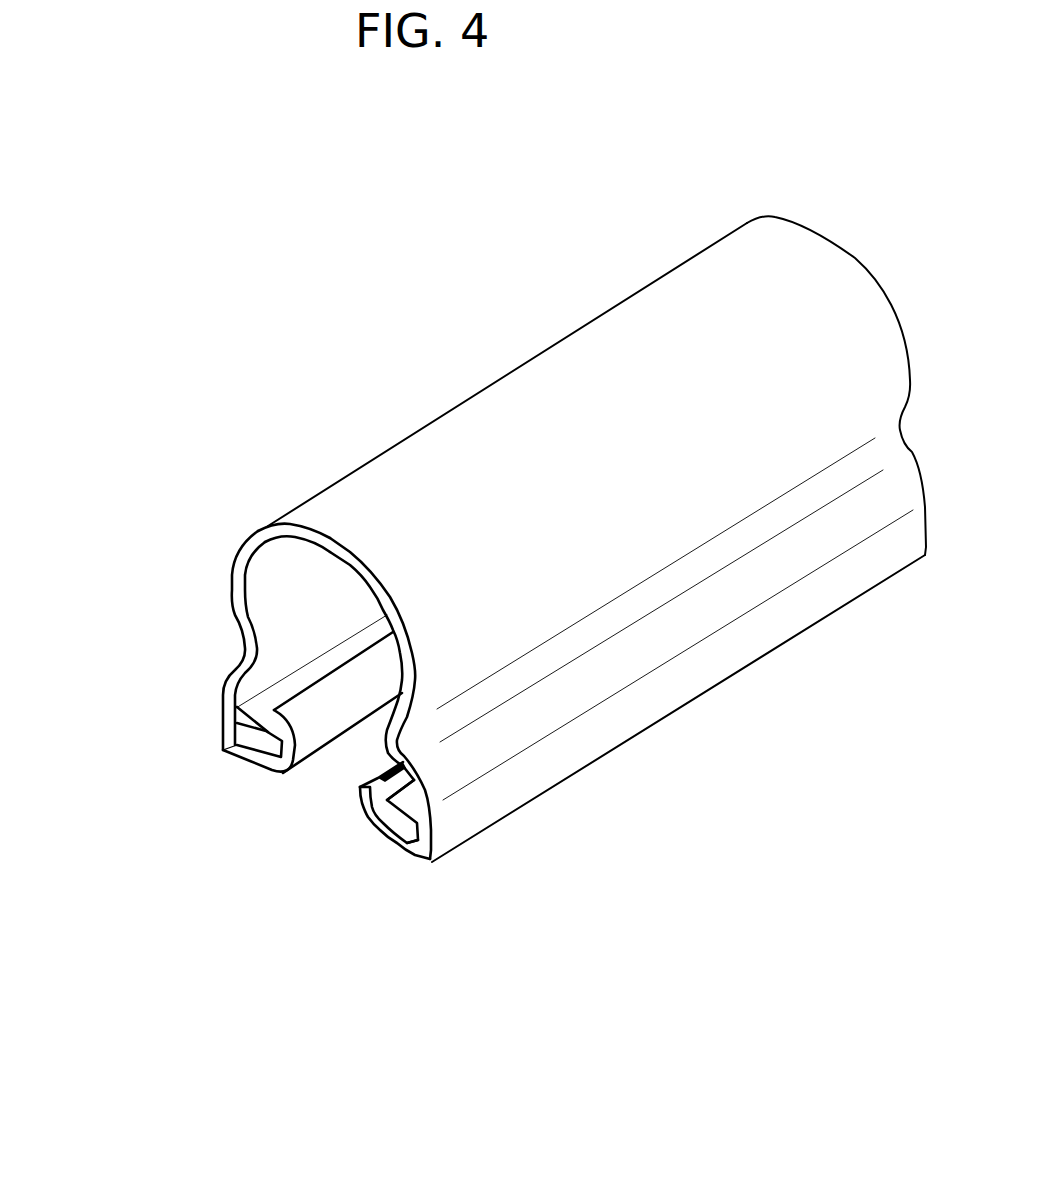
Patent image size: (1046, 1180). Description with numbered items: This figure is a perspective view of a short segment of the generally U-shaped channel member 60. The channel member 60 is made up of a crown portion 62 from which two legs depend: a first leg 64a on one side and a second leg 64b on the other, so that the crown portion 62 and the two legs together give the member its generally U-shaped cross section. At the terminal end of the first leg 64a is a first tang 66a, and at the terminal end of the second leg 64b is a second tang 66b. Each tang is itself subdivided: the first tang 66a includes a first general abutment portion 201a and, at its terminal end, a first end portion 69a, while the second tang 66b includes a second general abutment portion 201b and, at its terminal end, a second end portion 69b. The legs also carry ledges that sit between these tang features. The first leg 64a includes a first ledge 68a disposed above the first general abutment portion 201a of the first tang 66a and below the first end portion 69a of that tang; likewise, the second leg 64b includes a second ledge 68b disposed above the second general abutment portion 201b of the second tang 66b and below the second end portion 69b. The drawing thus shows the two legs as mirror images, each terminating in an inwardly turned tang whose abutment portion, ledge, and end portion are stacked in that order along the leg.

The generally U-shaped channel member 60 is at (664, 205).
The crown portion 62 is at (455, 408).
The first leg 64a is at (485, 637).
The second leg 64b is at (231, 593).
The first tang 66a is at (377, 820).
The second tang 66b is at (310, 720).
The first ledge 68a is at (407, 813).
The second ledge 68b is at (236, 723).
The first end portion 69a is at (373, 780).
The second end portion 69b is at (278, 730).
The first general abutment portion 201a is at (405, 845).
The second general abutment portion 201b is at (236, 749).